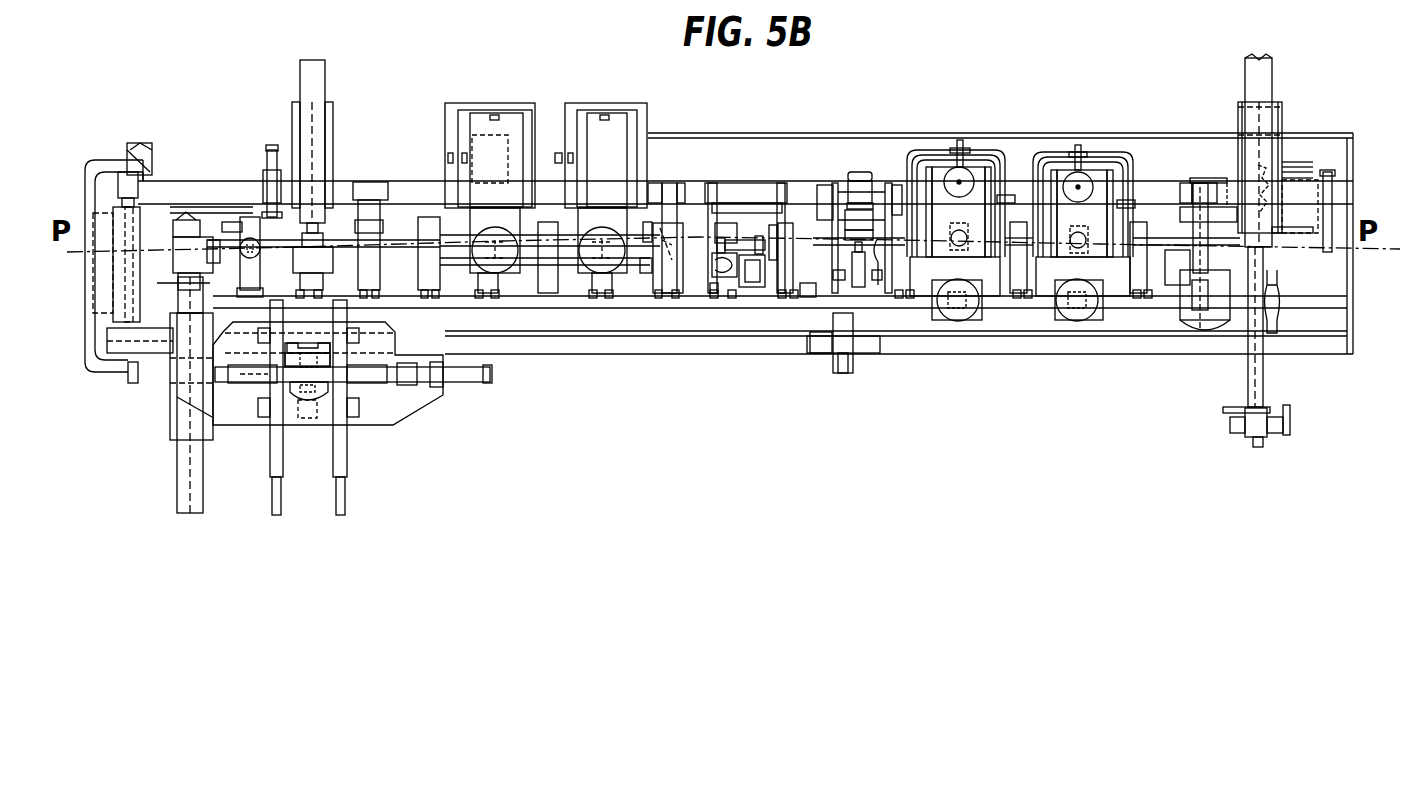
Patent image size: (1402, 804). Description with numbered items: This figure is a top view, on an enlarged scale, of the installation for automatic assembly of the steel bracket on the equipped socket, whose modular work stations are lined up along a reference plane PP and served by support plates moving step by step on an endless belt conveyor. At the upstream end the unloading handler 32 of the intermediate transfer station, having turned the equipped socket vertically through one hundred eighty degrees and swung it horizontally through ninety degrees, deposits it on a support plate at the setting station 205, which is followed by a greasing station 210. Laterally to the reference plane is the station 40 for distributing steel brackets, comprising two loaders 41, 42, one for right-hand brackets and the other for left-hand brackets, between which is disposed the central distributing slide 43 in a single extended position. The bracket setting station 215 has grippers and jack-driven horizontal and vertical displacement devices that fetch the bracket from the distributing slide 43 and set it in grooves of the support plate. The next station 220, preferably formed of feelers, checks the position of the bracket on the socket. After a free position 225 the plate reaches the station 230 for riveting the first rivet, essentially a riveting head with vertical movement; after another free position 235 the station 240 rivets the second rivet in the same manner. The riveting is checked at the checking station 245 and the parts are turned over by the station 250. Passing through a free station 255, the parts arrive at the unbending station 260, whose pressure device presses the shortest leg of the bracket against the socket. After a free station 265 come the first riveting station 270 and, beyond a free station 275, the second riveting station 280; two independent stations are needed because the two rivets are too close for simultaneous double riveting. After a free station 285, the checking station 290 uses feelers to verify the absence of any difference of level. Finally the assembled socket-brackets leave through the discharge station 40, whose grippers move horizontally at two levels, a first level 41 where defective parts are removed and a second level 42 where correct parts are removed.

The unloading handler 32 is at (120, 265).
The bracket distributing station / discharge station 40 is at (347, 470).
The loader / first discharge level 41 is at (268, 450).
The loader / second discharge level 42 is at (350, 432).
The central distributing slide 43 is at (306, 420).
The setting station 205 is at (196, 179).
The greasing station 210 is at (258, 156).
The bracket setting station 215 is at (338, 158).
The position checking station 220 is at (371, 180).
The free position 225 is at (433, 216).
The first rivet riveting station 230 is at (488, 103).
The free position 235 is at (560, 292).
The second rivet riveting station 240 is at (590, 103).
The riveting checking station 245 is at (672, 183).
The turn-over station 250 is at (752, 183).
The free station 255 is at (781, 309).
The unbending station 260 is at (858, 171).
The free station 265 is at (902, 311).
The first riveting station 270 is at (945, 151).
The free station 275 is at (1020, 311).
The second riveting station 280 is at (1065, 153).
The free station 285 is at (1140, 311).
The checking station 290 is at (1200, 181).